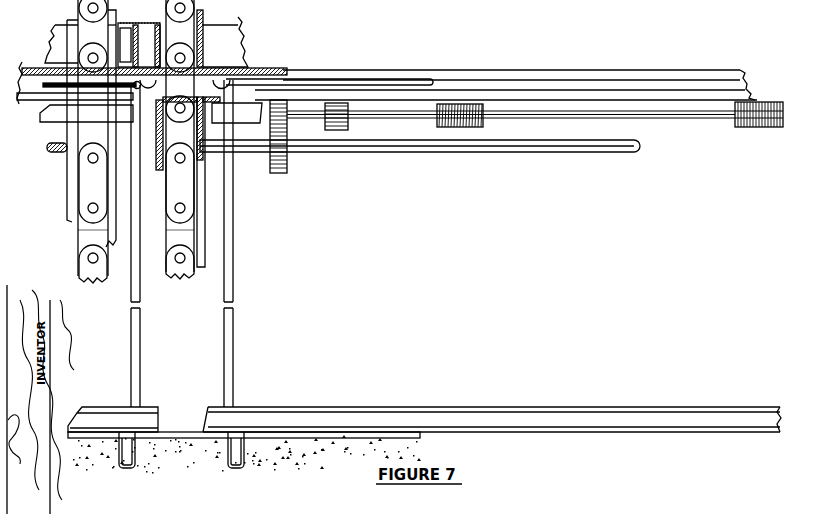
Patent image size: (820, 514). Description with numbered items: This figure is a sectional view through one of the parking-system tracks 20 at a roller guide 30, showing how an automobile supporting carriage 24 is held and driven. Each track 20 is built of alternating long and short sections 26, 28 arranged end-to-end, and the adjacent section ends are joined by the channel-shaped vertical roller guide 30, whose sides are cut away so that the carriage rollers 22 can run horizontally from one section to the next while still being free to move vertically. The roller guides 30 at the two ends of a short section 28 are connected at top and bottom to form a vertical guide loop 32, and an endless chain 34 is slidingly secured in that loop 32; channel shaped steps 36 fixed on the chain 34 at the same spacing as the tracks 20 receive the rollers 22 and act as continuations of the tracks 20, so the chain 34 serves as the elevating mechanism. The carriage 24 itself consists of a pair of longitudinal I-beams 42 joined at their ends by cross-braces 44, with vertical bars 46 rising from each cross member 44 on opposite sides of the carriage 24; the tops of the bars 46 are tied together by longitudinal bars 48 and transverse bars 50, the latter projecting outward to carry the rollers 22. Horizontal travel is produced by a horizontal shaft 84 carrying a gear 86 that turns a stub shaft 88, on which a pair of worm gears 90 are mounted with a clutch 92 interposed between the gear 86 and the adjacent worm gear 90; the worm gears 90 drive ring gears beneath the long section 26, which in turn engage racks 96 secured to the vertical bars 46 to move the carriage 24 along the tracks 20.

The track 20 is at (513, 68).
The rollers 22 is at (240, 75).
The automobile supporting carriage 24 is at (104, 402).
The long track section 26 is at (317, 75).
The short track section 28 is at (143, 95).
The roller guide 30 is at (68, 160).
The guide loop 32 is at (65, 195).
The endless chain 34 is at (90, 237).
The channel shaped step 36 is at (88, 73).
The I-beam 42 is at (320, 420).
The cross-brace 44 is at (238, 432).
The vertical bar 46 is at (135, 333).
The longitudinally extending bar 48 is at (400, 83).
The transversely extending bar 50 is at (237, 72).
The horizontal shaft 84 is at (540, 148).
The gear 86 is at (287, 160).
The stub shaft 88 is at (650, 117).
The worm gear 90 is at (483, 120).
The clutch 92 is at (342, 118).
The rack 96 is at (62, 116).